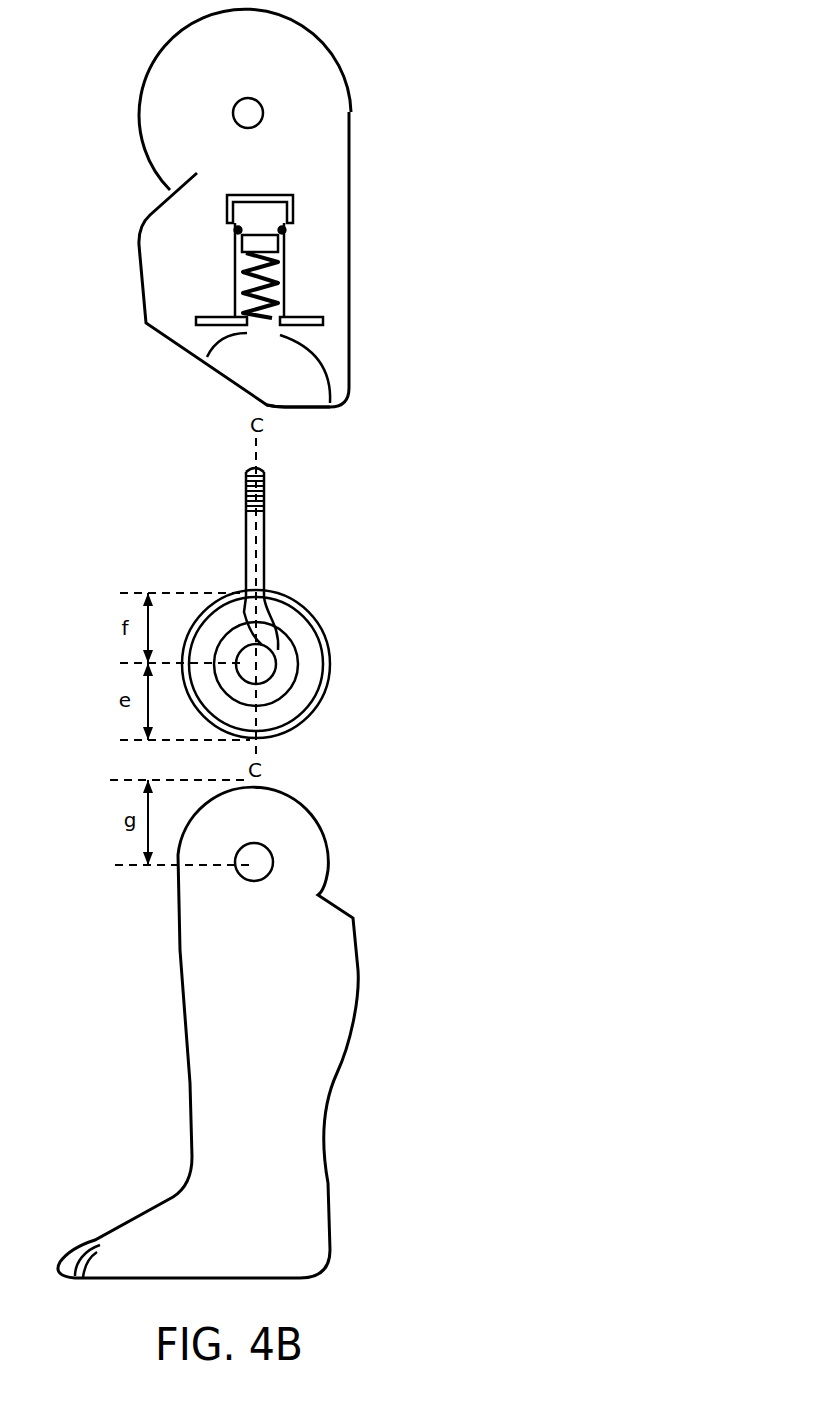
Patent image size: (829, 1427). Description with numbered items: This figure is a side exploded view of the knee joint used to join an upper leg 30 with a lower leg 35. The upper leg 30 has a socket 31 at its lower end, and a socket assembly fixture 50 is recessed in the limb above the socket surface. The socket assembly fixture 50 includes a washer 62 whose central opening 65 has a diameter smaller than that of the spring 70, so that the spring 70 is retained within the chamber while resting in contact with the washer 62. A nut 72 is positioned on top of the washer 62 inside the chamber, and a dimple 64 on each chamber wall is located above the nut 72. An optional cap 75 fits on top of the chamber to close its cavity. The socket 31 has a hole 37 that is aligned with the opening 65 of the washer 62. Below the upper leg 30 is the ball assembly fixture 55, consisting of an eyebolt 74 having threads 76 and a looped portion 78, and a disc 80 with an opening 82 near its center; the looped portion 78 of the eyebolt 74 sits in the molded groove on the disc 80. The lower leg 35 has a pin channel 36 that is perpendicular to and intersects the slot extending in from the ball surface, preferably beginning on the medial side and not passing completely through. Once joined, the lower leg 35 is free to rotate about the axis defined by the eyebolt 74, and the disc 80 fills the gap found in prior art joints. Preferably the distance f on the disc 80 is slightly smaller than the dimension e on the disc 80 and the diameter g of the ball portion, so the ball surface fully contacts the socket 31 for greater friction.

The upper leg 30 is at (474, 95).
The socket 31 is at (293, 388).
The lower leg 35 is at (434, 915).
The pin channel 36 is at (260, 857).
The hole 37 is at (260, 343).
The socket assembly fixture 50 is at (443, 205).
The ball assembly fixture 55 is at (477, 520).
The washer 62 is at (322, 321).
The dimple 64 is at (207, 270).
The opening 65 is at (280, 335).
The spring 70 is at (285, 277).
The nut 72 is at (283, 242).
The eyebolt 74 is at (250, 537).
The cap 75 is at (290, 196).
The threads 76 is at (265, 498).
The looped portion 78 is at (295, 663).
The disc 80 is at (275, 712).
The opening 82 is at (272, 648).